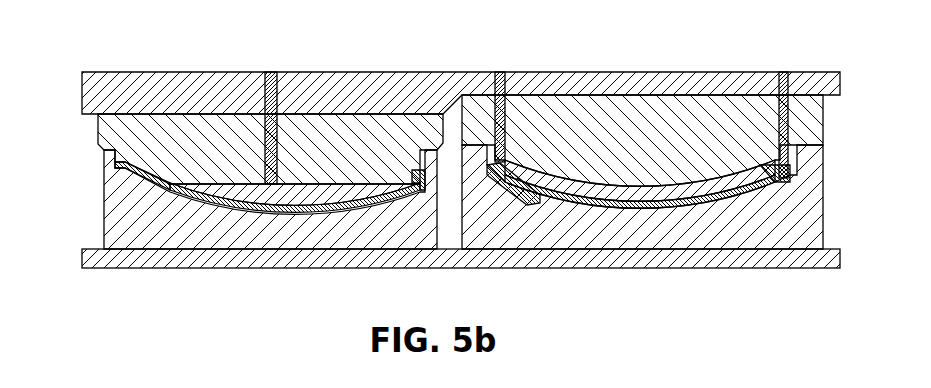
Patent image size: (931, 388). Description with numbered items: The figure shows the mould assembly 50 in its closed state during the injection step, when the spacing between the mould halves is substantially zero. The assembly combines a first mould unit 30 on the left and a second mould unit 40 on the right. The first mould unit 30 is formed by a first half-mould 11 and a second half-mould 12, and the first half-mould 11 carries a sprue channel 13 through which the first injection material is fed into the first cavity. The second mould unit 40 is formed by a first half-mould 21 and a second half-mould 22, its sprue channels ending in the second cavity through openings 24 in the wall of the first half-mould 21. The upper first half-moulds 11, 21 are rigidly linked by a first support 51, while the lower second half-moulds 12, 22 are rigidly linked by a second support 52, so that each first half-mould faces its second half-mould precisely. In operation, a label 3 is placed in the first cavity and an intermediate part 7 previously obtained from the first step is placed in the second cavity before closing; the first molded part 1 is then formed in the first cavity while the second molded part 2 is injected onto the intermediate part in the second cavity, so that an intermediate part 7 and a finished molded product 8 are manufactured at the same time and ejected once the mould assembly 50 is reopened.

The first molded part 1 is at (296, 194).
The second molded part 2 is at (525, 190).
The label 3 is at (272, 208).
The intermediate part 7 is at (360, 160).
The molded product 8 is at (736, 156).
The first half-mould 11 is at (208, 137).
The second half-mould 12 is at (248, 230).
The sprue channel 13 is at (282, 122).
The first half-mould 21 is at (578, 142).
The second half-mould 22 is at (573, 230).
The openings 24 is at (502, 100).
The first mould unit 30 is at (270, 198).
The second mould unit 40 is at (642, 198).
The mould assembly 50 is at (433, 178).
The first support 51 is at (173, 90).
The second support 52 is at (461, 289).